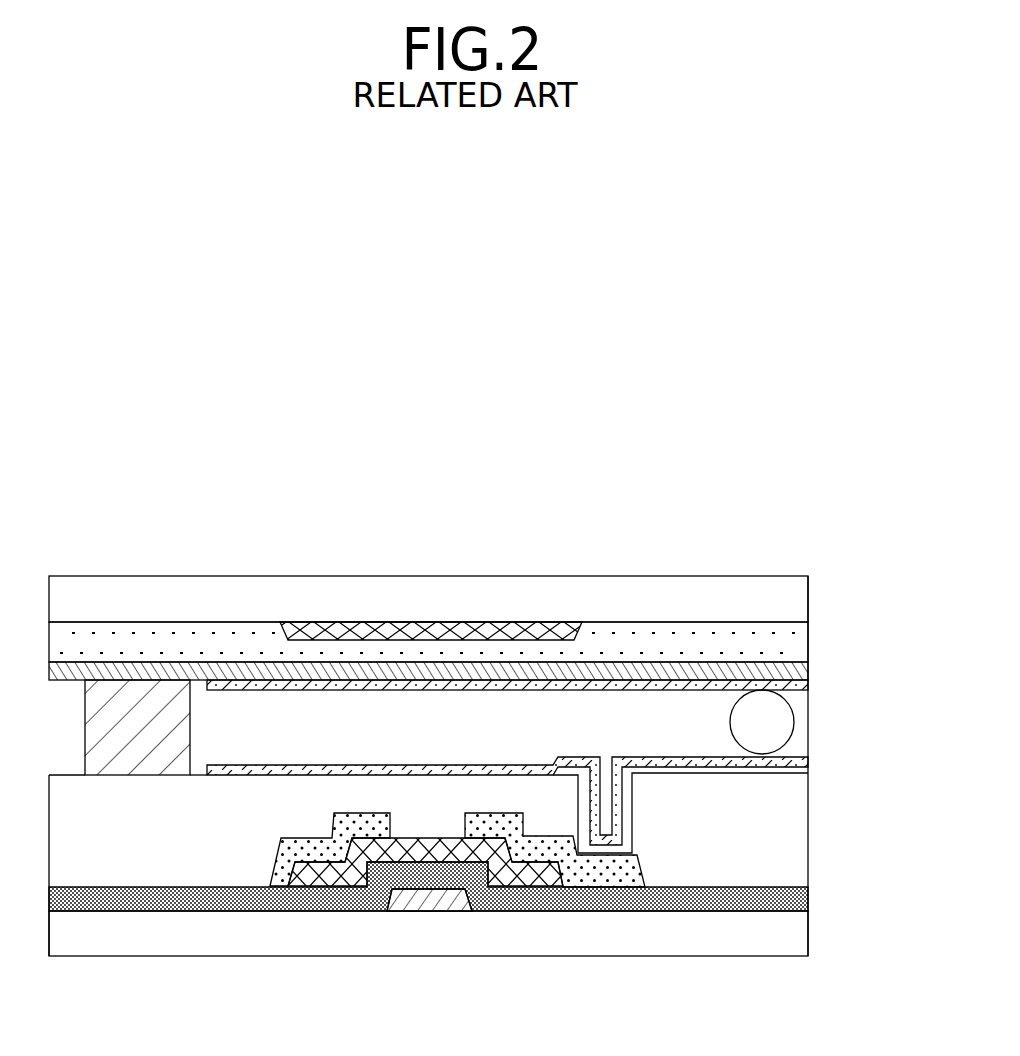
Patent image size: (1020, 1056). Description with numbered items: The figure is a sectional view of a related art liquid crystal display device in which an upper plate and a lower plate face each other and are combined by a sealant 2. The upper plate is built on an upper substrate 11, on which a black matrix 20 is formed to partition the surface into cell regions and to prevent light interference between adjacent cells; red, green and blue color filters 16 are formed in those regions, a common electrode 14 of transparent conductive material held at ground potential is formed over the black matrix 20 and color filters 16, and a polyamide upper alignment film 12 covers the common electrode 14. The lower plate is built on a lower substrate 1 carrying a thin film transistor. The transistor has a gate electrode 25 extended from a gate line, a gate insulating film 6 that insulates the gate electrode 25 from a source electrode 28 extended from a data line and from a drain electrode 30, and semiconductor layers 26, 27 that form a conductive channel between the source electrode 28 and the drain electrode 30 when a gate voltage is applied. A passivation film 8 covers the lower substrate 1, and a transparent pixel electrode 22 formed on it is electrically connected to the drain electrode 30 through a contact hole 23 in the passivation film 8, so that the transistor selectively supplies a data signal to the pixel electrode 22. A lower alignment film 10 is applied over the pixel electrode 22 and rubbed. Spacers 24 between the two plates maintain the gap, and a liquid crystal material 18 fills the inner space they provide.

The lower substrate 1 is at (793, 935).
The sealant 2 is at (92, 720).
The gate insulating film 6 is at (795, 897).
The passivation film 8 is at (793, 838).
The lower alignment film 10 is at (808, 762).
The upper substrate 11 is at (793, 597).
The upper alignment film 12 is at (808, 683).
The common electrode 14 is at (808, 668).
The color filter 16 is at (793, 631).
The liquid crystal material 18 is at (388, 725).
The black matrix 20 is at (452, 630).
The pixel electrode 22 is at (808, 772).
The contact hole 23 is at (605, 775).
The spacer 24 is at (795, 720).
The gate electrode 25 is at (431, 902).
The semiconductor layer 26 is at (355, 878).
The semiconductor layer 27 is at (538, 878).
The source electrode 28 is at (285, 885).
The drain electrode 30 is at (627, 887).